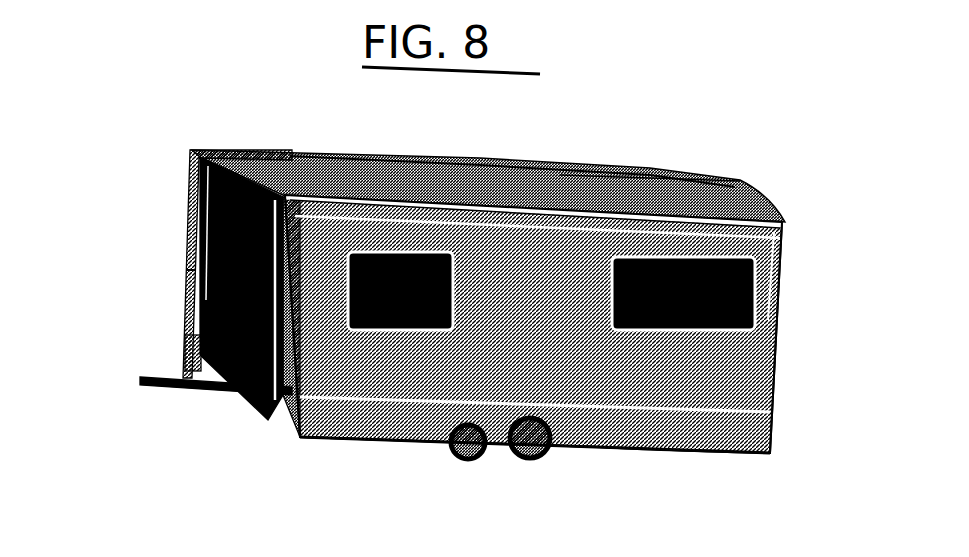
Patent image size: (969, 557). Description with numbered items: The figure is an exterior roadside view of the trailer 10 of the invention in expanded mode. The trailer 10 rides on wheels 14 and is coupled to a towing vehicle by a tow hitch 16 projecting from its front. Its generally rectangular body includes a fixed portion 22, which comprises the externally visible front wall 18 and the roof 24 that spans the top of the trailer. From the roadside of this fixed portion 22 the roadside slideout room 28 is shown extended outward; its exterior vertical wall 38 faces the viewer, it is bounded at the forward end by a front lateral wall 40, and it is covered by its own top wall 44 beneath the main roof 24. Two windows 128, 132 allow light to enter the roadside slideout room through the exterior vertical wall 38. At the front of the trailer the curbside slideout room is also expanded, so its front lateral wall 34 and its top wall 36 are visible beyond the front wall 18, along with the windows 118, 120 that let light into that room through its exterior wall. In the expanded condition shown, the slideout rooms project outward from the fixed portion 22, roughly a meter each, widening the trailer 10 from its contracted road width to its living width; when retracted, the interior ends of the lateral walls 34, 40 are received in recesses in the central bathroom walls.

The trailer 10 is at (772, 205).
The wheels 14 is at (529, 457).
The tow hitch 16 is at (173, 395).
The front wall 18 is at (197, 210).
The fixed portion 22 is at (722, 190).
The roof 24 is at (652, 172).
The roadside slideout room 28 is at (623, 458).
The front lateral wall 34 is at (183, 336).
The top wall 36 is at (205, 160).
The exterior vertical wall 38 is at (737, 362).
The front lateral wall 40 is at (288, 392).
The top wall 44 is at (362, 214).
The window 118 is at (192, 241).
The window 120 is at (400, 333).
The window 128 is at (683, 333).
The window 132 is at (190, 278).